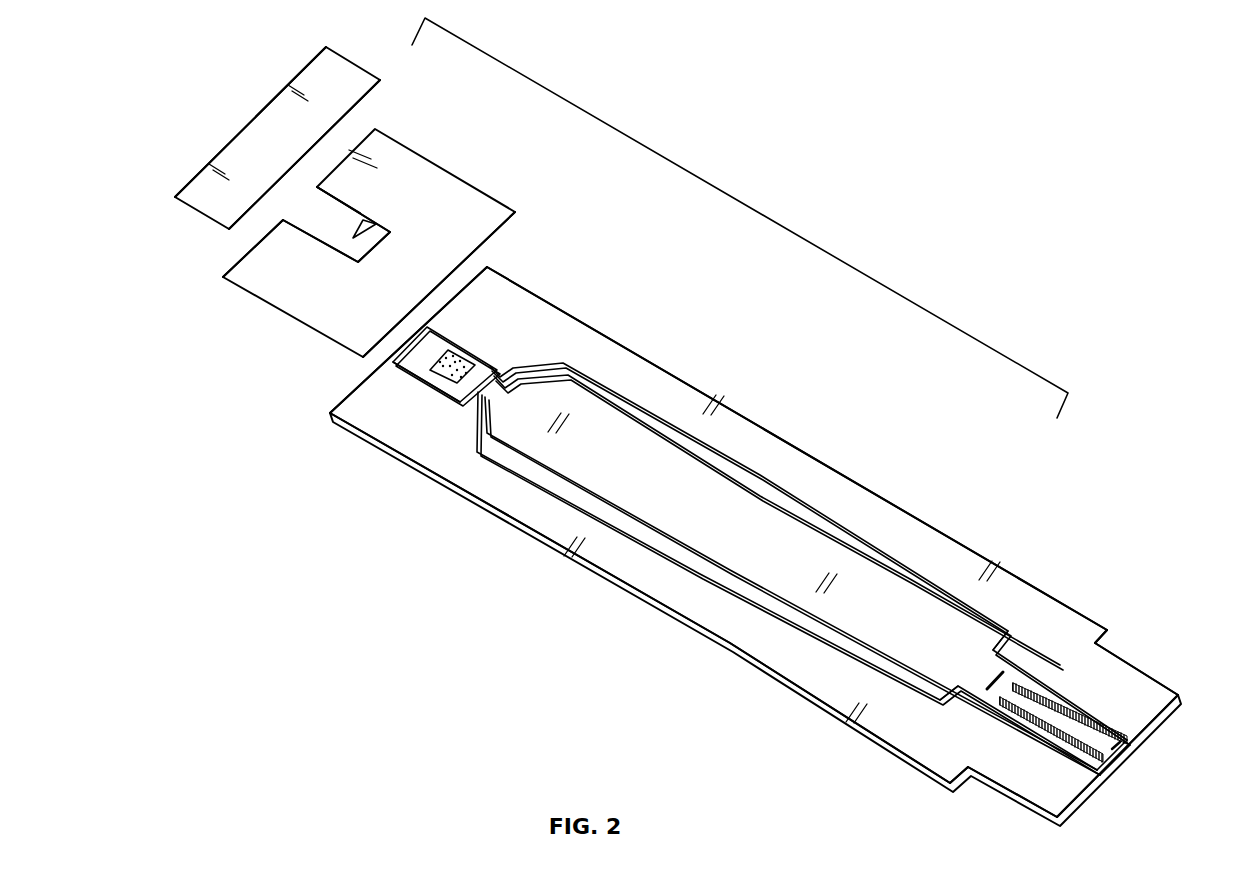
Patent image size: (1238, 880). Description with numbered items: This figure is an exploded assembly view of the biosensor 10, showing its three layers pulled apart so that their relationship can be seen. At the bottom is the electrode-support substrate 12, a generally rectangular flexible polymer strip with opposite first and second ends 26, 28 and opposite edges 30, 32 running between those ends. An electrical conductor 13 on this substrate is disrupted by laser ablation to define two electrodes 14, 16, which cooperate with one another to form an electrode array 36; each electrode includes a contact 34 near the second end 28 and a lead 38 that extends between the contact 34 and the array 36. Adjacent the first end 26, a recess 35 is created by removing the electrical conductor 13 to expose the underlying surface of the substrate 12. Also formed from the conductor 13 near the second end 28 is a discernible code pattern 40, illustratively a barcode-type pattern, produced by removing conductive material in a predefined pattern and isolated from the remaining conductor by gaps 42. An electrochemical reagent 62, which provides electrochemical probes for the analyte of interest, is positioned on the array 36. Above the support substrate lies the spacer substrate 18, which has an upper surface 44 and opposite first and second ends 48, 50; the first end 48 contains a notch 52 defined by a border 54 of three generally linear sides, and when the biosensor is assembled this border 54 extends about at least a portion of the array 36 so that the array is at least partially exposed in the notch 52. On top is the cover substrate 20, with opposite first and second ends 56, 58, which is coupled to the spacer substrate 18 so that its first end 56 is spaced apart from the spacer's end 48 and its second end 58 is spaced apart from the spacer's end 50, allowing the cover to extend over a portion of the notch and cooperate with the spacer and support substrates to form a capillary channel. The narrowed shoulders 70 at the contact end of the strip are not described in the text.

The biosensor 10 is at (750, 207).
The electrode-support substrate 12 is at (530, 610).
The electrical conductor 13 is at (593, 420).
The electrode 14 is at (542, 493).
The electrode 16 is at (824, 512).
The spacer substrate 18 is at (250, 319).
The cover substrate 20 is at (158, 197).
The first end 26 is at (345, 406).
The second end 28 is at (1165, 710).
The edge 30 is at (785, 685).
The edge 32 is at (870, 490).
The contact 34 is at (1105, 700).
The recess 35 is at (440, 330).
The electrode array 36 is at (445, 384).
The lead 38 is at (740, 460).
The code pattern 40 is at (1050, 682).
The gap 42 is at (1125, 752).
The upper surface 44 is at (400, 175).
The first end 48 is at (222, 277).
The second end 50 is at (500, 229).
The notch 52 is at (324, 224).
The border 54 is at (355, 237).
The first end 56 is at (248, 124).
The second end 58 is at (364, 99).
The electrochemical reagent 62 is at (468, 368).
The shoulder notches 70 is at (940, 576).